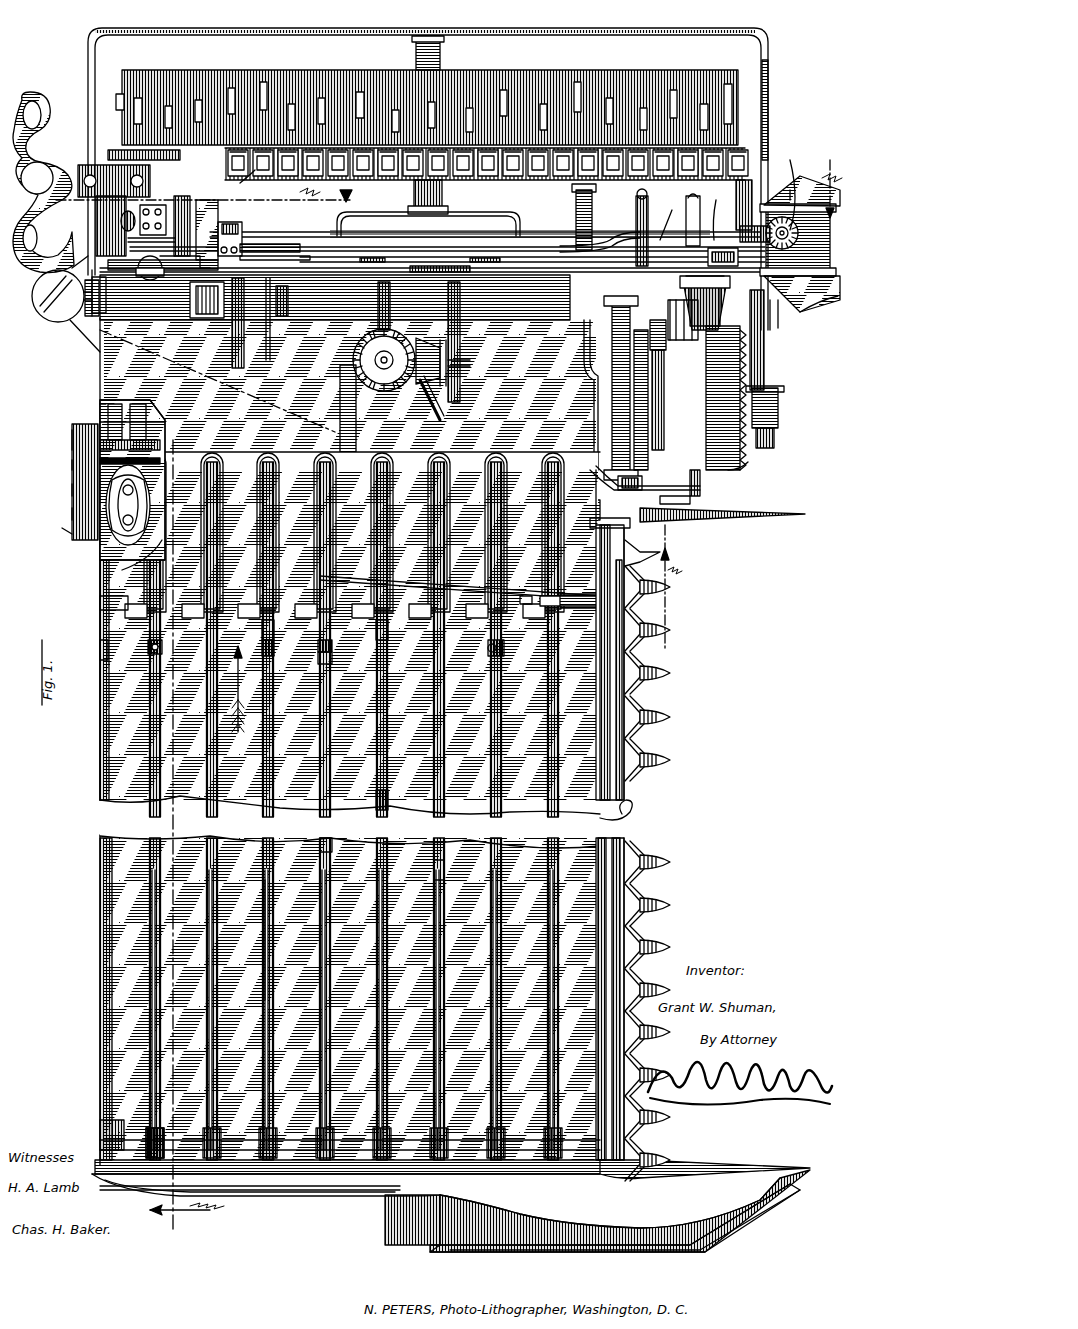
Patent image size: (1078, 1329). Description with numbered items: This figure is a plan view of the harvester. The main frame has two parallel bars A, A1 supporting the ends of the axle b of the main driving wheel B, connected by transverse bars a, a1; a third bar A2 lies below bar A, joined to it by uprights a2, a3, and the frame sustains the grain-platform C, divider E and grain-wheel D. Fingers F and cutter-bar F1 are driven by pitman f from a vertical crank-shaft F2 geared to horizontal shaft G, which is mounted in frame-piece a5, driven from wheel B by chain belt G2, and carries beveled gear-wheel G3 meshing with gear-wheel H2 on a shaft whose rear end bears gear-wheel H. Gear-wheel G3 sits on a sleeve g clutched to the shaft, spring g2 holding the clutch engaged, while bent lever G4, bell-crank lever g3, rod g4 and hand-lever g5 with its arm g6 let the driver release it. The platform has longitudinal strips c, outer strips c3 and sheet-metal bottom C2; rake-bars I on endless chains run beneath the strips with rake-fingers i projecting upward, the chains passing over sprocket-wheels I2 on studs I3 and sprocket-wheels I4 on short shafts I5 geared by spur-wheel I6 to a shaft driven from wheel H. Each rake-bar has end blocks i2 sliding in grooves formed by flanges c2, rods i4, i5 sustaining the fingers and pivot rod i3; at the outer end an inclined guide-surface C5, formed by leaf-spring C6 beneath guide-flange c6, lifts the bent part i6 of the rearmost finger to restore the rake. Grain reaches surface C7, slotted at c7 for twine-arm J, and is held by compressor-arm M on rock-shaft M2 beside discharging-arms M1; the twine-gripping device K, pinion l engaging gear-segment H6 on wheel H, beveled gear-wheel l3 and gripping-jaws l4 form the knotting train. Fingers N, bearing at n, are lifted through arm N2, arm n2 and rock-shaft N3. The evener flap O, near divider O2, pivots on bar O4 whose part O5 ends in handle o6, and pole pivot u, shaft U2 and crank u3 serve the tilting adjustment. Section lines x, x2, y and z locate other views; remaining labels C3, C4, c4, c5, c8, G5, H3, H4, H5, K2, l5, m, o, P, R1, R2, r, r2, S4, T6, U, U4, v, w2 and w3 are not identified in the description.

The main frame bar A is at (322, 28).
The transverse bar a is at (766, 108).
The transverse bar a1 is at (88, 100).
The upright a2 is at (760, 340).
The main frame bar A1 is at (764, 403).
The third frame bar A2 is at (766, 340).
The upright a3 is at (78, 262).
The frame-piece a5 is at (692, 219).
The main supporting or driving wheel B is at (427, 107).
The axle b is at (416, 50).
The grain-platform C is at (350, 806).
The horizontal bottom C2 is at (100, 606).
The plate bracket C3 is at (150, 442).
The guide line C4 is at (217, 381).
The inclined guide-surface C5 is at (148, 1178).
The leaf-spring C6 is at (100, 1130).
The horizontal surface C7 is at (617, 798).
The longitudinal strips c is at (350, 806).
The horizontal flanges c2 is at (252, 655).
The outer strips c3 is at (380, 810).
The channel stop c4 is at (280, 644).
The side lug c5 is at (113, 645).
The stationary guide-flange c6 is at (146, 1136).
The slot c7 is at (131, 561).
The post c8 is at (269, 308).
The grain-wheel D is at (451, 1211).
The divider E is at (740, 1178).
The fingers F is at (100, 530).
The cutter-bar F1 is at (644, 854).
The crank-shaft F2 is at (642, 573).
The pitman f is at (650, 524).
The horizontal shaft G is at (488, 156).
The chain belt G2 is at (236, 174).
The beveled gear-wheel G3 is at (683, 326).
The bent lever G4 is at (590, 214).
The link G5 is at (671, 221).
The sleeve g is at (717, 220).
The spring g2 is at (718, 245).
The bell-crank lever g3 is at (782, 179).
The rod g4 is at (268, 246).
The hand-lever g5 is at (290, 248).
The laterally-projecting arm g6 is at (232, 230).
The gear-wheel H is at (616, 340).
The gear-wheel H2 is at (650, 390).
The pinion H3 is at (646, 385).
The lever H4 is at (599, 395).
The slide H5 is at (580, 494).
The gear-segment H6 is at (631, 489).
The rake-bars I is at (390, 640).
The sprocket-wheels I2 is at (56, 523).
The studs I3 is at (72, 514).
The sprocket-wheels I4 is at (72, 490).
The short shafts I5 is at (72, 466).
The spur-wheel I6 is at (72, 440).
The rake-fingers i is at (260, 890).
The end blocks i2 is at (316, 650).
The rod i3 is at (307, 671).
The rod i4 is at (434, 878).
The rod i5 is at (488, 650).
The horizontally-bent part i6 is at (140, 654).
The twine-arm J is at (338, 425).
The twine-gripping device K is at (428, 224).
The arm K2 is at (434, 398).
The pinion l is at (636, 484).
The beveled gear-wheel l3 is at (360, 355).
The gripping-jaws l4 is at (416, 369).
The shaft l5 is at (438, 342).
The compressor-arm M is at (208, 300).
The discharging-arms M1 is at (340, 290).
The rock-shaft M2 is at (400, 235).
The arm m is at (820, 302).
The fingers N is at (520, 586).
The depending arm N2 is at (551, 612).
The rock-shaft N3 is at (610, 815).
The bearings n is at (515, 601).
The depending arm n2 is at (734, 448).
The hinged flap O is at (657, 271).
The inner guard finger or divider O2 is at (690, 500).
The vertical bar O4 is at (560, 246).
The upper horizontal part O5 is at (338, 244).
The pin o is at (697, 470).
The handle o6 is at (150, 249).
The knob P is at (66, 304).
The ribbon mechanism R1 is at (155, 233).
The ratchet wheel R2 is at (714, 398).
The roller r is at (127, 213).
The rod r2 is at (607, 237).
The shield S4 is at (160, 282).
The stop T6 is at (100, 404).
The bracket U is at (800, 244).
The horizontal shaft U2 is at (794, 176).
The post U4 is at (628, 227).
The pivot u is at (790, 246).
The crank u3 is at (757, 198).
The arrow v is at (214, 689).
The arm w2 is at (783, 303).
The arm w3 is at (192, 230).
The section line x is at (832, 189).
The section line x2 is at (198, 198).
The section line y is at (187, 840).
The section line z is at (665, 603).